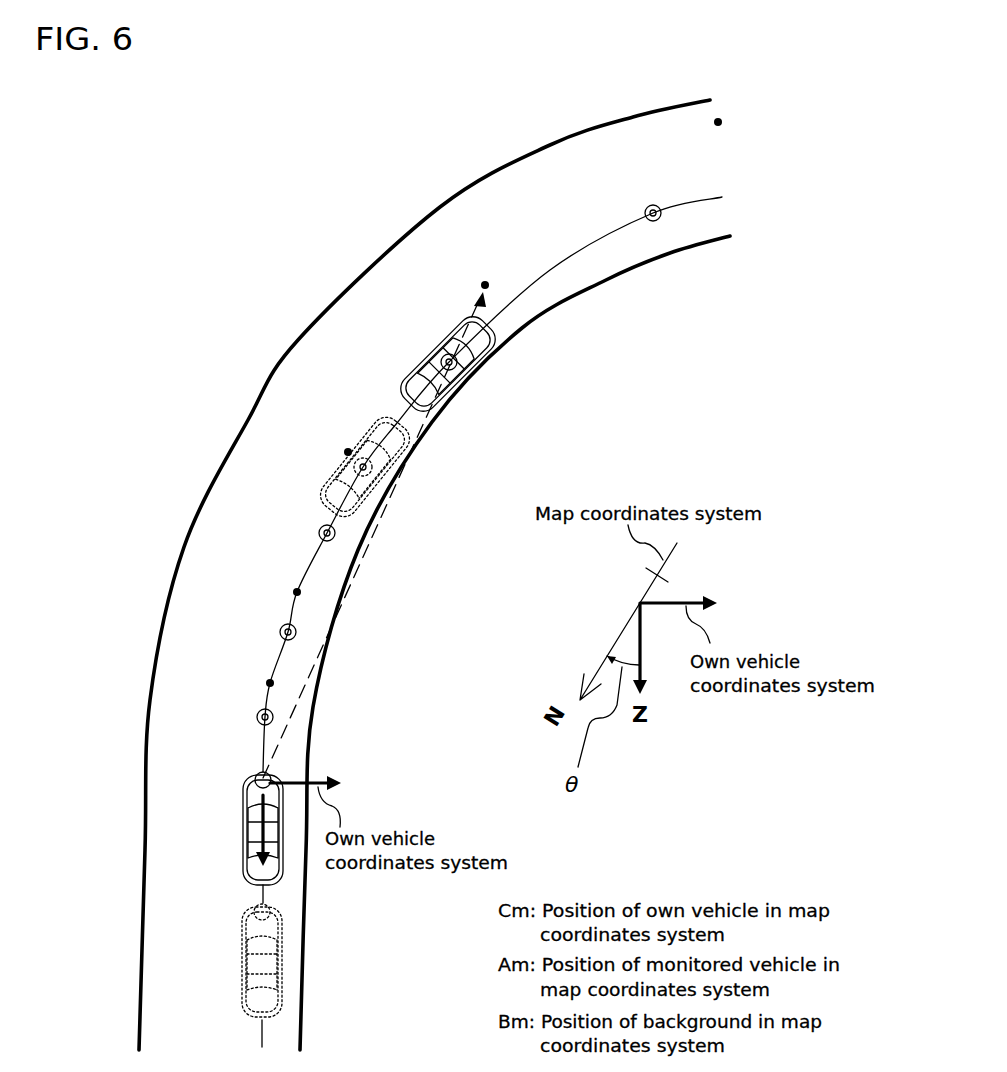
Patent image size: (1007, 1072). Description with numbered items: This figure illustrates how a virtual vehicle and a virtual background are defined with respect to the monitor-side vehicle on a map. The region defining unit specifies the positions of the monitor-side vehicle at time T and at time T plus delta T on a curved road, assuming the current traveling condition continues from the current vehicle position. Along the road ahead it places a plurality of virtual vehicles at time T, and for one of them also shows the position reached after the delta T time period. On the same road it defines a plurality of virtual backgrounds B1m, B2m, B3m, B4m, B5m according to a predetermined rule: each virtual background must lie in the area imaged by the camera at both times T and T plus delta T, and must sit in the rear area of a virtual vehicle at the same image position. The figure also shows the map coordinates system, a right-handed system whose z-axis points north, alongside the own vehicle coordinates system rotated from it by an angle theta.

The virtual background B1m is at (270, 683).
The virtual background B2m is at (297, 592).
The virtual background B3m is at (348, 452).
The virtual background B4m is at (485, 285).
The virtual background B5m is at (718, 122).